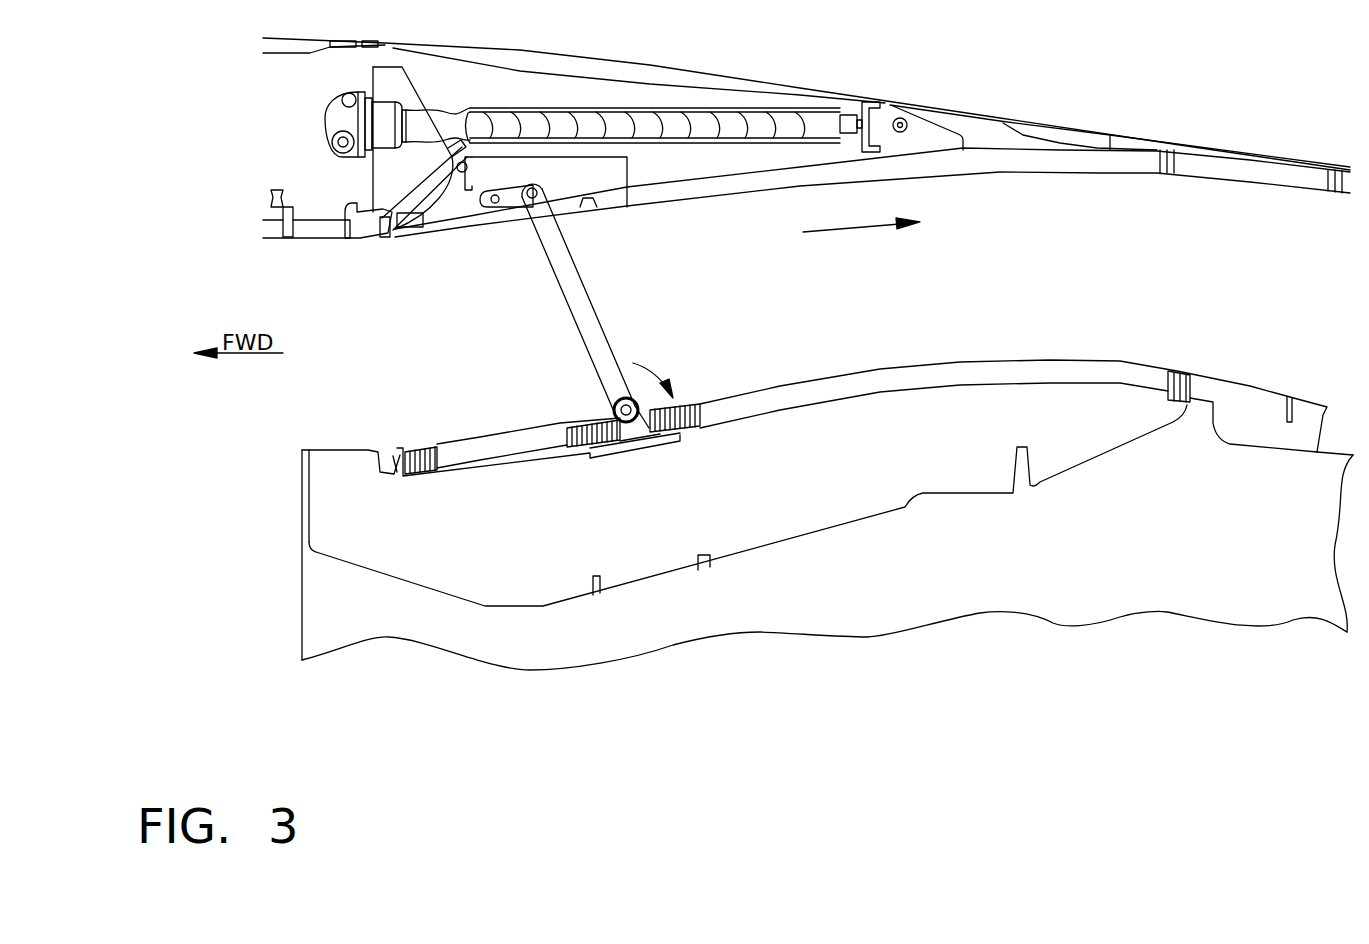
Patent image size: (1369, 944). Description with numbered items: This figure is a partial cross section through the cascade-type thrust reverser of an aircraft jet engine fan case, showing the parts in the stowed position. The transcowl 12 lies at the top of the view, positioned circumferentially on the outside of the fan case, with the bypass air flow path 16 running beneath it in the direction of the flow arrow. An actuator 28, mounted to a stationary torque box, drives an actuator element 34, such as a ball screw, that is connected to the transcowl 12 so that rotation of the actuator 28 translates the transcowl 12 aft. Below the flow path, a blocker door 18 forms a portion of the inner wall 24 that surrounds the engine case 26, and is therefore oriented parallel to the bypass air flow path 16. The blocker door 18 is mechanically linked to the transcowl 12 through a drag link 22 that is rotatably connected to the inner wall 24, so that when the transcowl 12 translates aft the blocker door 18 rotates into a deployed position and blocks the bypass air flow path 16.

The transcowl 12 is at (700, 73).
The actuator element 34 is at (735, 123).
The actuator 28 is at (332, 118).
The blocker door 18 is at (497, 222).
The drag link 22 is at (587, 303).
The bypass air flow path 16 is at (840, 228).
The inner wall 24 is at (860, 380).
The engine case 26 is at (513, 610).